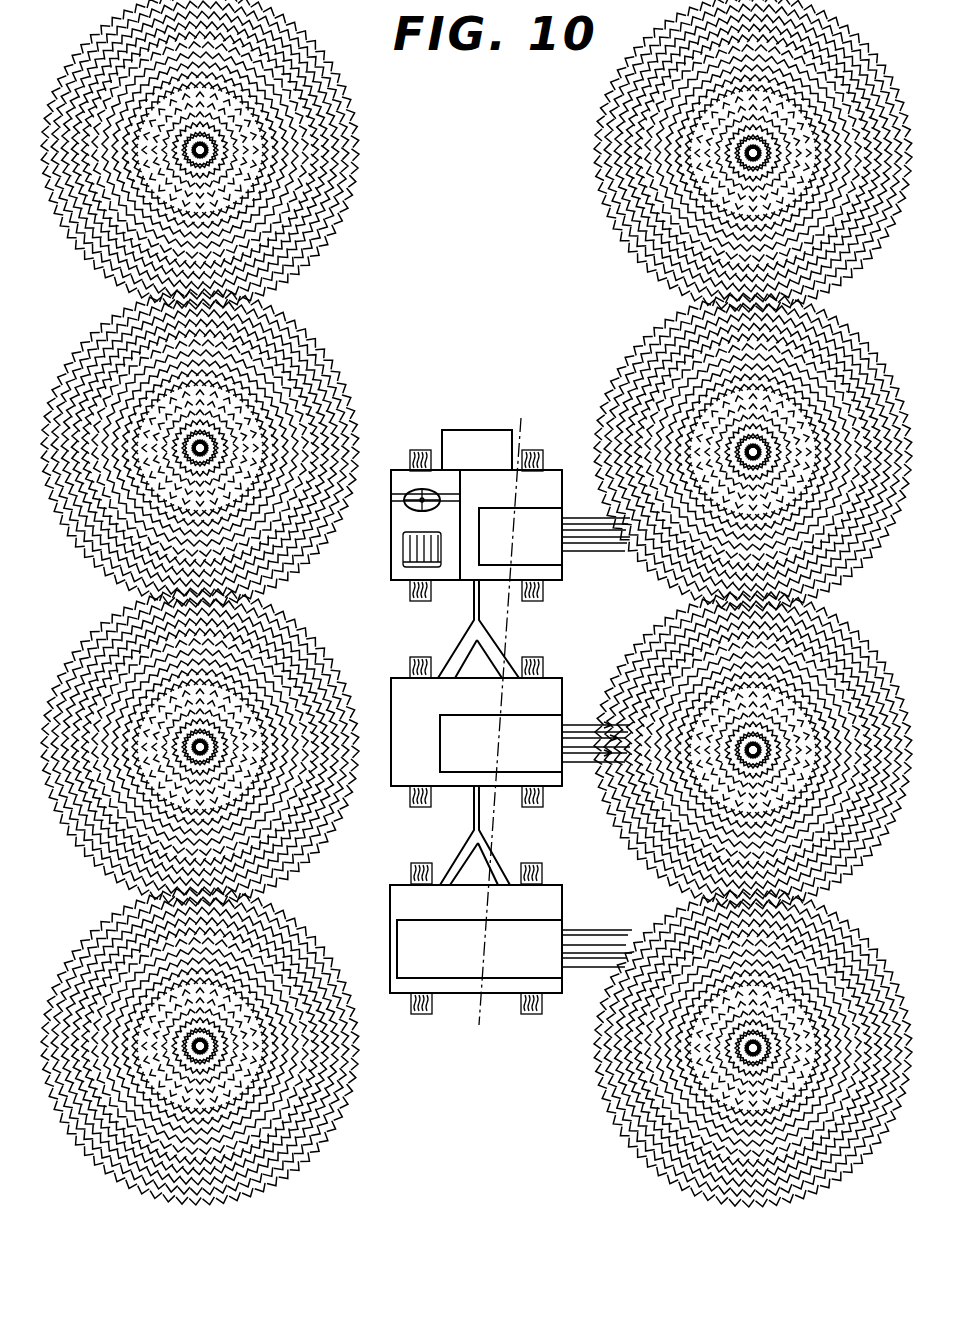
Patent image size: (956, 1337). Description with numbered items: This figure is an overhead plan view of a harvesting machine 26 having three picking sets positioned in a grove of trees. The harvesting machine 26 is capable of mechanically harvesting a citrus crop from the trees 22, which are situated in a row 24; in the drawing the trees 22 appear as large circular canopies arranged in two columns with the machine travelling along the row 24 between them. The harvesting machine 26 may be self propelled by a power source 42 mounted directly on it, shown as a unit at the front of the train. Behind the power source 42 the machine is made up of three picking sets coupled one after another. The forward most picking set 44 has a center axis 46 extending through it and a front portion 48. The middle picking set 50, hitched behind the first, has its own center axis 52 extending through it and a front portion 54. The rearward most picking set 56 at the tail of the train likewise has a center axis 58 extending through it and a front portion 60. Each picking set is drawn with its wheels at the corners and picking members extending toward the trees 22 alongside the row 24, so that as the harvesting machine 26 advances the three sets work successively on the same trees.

The trees 22 is at (300, 170).
The row 24 is at (278, 229).
The harvesting machine 26 is at (421, 371).
The power source 42 is at (473, 430).
The forward most picking set 44 is at (553, 581).
The center axis 46 is at (520, 486).
The front portion 48 is at (452, 470).
The middle picking set 50 is at (553, 787).
The center axis 52 is at (503, 700).
The front portion 54 is at (404, 678).
The rearward most picking set 56 is at (512, 1003).
The center axis 58 is at (480, 908).
The front portion 60 is at (392, 880).